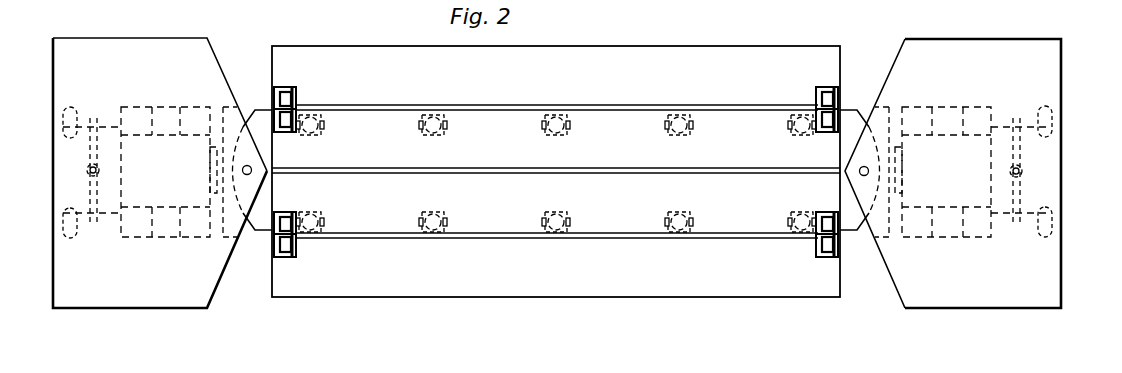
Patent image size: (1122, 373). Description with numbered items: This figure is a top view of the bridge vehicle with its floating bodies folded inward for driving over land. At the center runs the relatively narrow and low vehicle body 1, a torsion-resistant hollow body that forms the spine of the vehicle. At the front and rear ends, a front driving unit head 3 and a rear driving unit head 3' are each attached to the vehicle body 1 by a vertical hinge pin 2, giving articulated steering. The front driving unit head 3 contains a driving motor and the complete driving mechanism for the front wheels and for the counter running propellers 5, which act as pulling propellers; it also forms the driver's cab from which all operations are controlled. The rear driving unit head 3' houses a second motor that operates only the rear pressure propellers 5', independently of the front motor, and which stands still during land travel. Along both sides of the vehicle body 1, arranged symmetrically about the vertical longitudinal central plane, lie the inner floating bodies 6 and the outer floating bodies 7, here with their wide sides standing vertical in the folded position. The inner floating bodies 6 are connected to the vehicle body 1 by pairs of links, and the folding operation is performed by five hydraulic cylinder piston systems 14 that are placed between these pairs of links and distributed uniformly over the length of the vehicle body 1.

The vehicle body 1 is at (262, 117).
The vertical hinge pin 2 is at (243, 166).
The front driving unit head 3 is at (160, 155).
The rear driving unit head 3' is at (953, 155).
The counter running propellers 5 is at (92, 172).
The rear pressure propellers 5' is at (1021, 171).
The inner floating bodies 6 is at (487, 183).
The outer floating bodies 7 is at (602, 50).
The hydraulic cylinder piston systems 14 is at (665, 129).